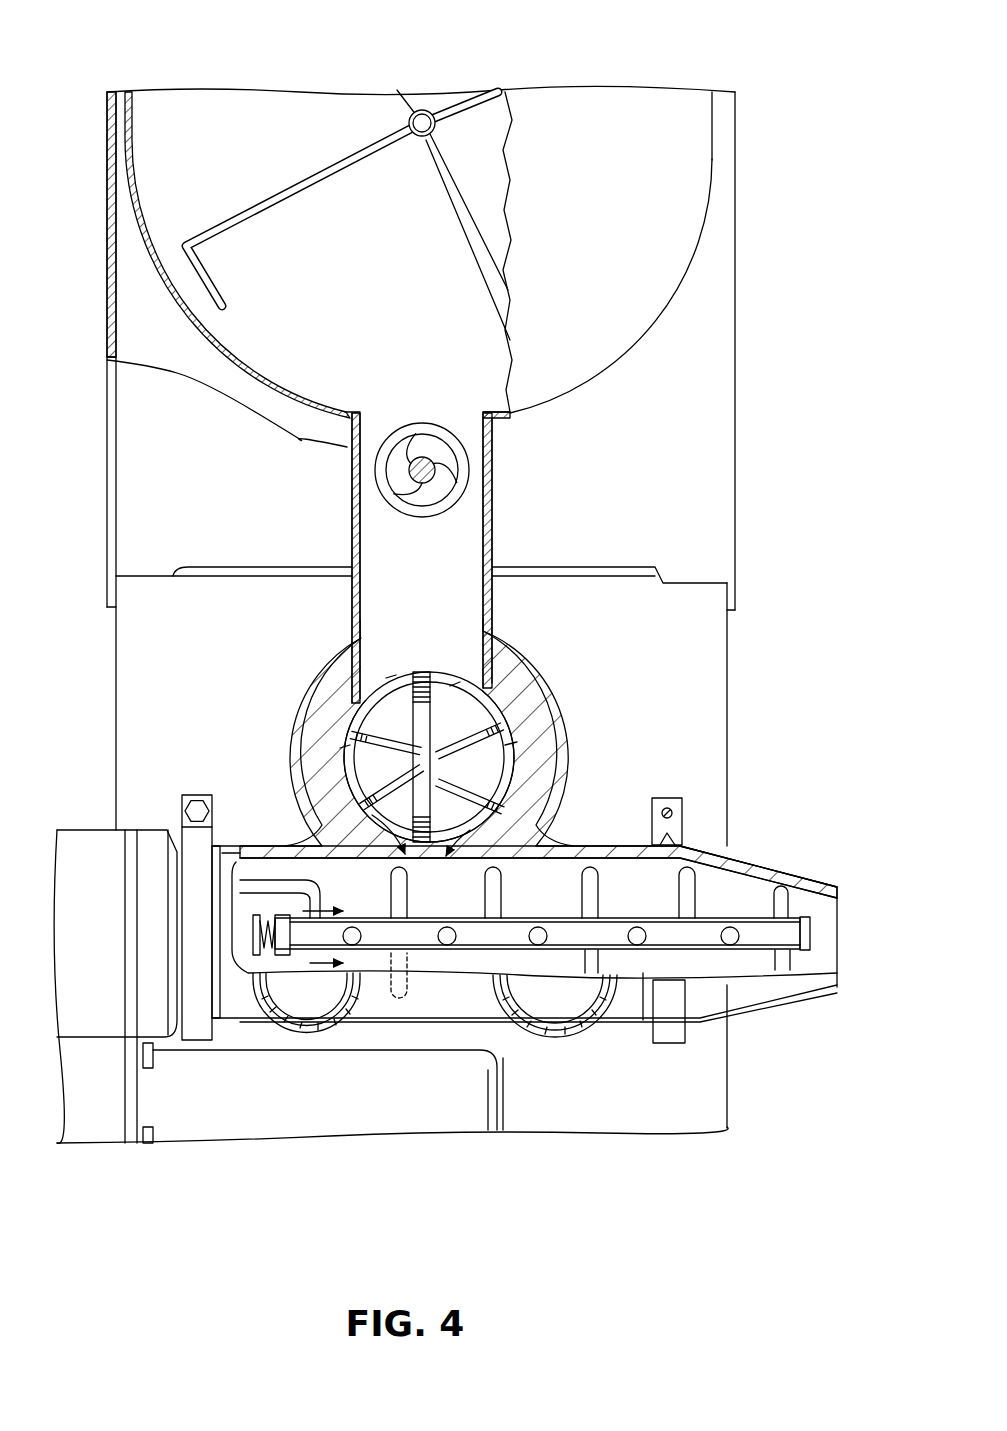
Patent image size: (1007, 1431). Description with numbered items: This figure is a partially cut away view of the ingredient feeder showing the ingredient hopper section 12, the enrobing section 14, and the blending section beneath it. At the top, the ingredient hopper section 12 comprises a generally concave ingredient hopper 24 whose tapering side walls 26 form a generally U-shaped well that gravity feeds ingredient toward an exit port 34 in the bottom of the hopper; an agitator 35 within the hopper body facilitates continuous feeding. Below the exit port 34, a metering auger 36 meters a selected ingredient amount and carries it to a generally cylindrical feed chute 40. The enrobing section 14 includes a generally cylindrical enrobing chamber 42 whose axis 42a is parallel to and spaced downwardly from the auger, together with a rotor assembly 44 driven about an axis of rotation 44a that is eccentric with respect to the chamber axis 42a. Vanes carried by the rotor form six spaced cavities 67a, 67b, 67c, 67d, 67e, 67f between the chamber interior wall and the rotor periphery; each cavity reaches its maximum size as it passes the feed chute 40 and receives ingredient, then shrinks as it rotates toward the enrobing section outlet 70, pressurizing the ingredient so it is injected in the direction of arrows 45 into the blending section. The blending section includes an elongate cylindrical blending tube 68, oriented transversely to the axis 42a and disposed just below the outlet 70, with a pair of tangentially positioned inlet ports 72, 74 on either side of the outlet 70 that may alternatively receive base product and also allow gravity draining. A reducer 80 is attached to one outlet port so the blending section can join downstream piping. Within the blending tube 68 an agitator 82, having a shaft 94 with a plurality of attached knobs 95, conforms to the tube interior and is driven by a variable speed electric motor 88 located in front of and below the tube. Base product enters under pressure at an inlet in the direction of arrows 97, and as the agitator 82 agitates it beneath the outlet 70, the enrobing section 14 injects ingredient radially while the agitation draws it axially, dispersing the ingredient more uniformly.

The ingredient hopper section 12 is at (746, 291).
The ingredient hopper 24 is at (641, 92).
The side walls 26 is at (137, 114).
The agitator 35 is at (300, 168).
The exit port 34 is at (365, 422).
The metering auger 36 is at (457, 460).
The feed chute 40 is at (467, 539).
The enrobing section 14 is at (580, 687).
The enrobing chamber 42 is at (480, 700).
The enrobing chamber axis 42a is at (440, 760).
The rotor assembly 44 is at (390, 718).
The axis of rotation 44a is at (440, 762).
The arrows 45 is at (372, 815).
The cavity 67a is at (455, 683).
The cavity 67b is at (517, 742).
The cavity 67c is at (470, 828).
The cavity 67d is at (395, 822).
The cavity 67e is at (348, 745).
The cavity 67f is at (391, 677).
The enrobing section outlet 70 is at (503, 830).
The reducer 80 is at (767, 870).
The blending tube 68 is at (603, 845).
The knobs 95 is at (690, 897).
The agitator 82 is at (568, 945).
The shaft 94 is at (670, 935).
The inlet port 72 is at (308, 1031).
The inlet port 74 is at (546, 1034).
The arrows 97 is at (315, 905).
The variable speed electric motor 88 is at (484, 1125).